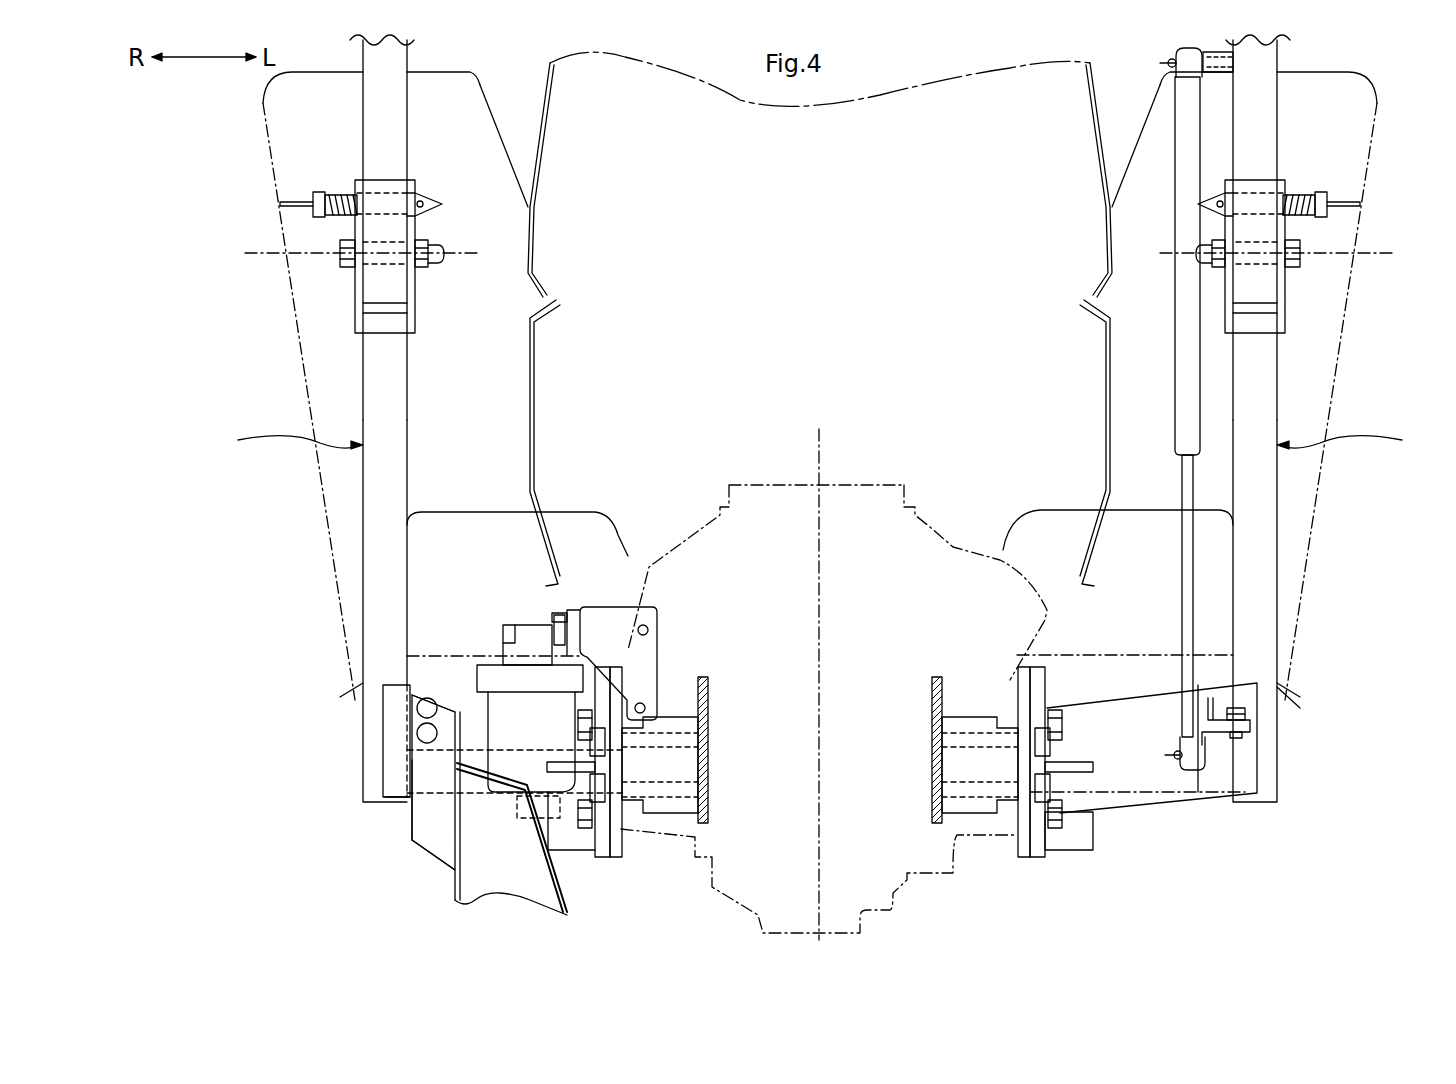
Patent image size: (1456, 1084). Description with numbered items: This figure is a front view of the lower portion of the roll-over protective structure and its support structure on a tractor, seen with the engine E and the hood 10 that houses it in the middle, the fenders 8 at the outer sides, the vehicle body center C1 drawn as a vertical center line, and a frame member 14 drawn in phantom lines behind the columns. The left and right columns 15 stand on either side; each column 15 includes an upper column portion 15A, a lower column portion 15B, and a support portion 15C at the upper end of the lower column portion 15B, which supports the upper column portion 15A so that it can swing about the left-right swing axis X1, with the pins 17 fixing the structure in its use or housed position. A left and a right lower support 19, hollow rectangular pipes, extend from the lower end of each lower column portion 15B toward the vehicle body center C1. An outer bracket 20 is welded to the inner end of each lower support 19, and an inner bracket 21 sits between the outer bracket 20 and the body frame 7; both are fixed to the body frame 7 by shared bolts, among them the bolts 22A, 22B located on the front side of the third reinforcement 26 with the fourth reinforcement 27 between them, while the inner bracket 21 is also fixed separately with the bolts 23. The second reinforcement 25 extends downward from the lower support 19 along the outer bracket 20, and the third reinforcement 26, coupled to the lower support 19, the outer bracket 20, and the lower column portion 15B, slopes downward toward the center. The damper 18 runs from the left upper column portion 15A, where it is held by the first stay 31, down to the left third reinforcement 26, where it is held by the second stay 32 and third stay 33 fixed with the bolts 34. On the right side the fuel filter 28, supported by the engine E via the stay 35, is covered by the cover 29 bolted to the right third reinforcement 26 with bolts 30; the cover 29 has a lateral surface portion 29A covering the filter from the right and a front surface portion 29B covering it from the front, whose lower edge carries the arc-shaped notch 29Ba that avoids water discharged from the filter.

The body frame 7 is at (708, 707).
The fender 8 is at (455, 73).
The hood 10 is at (1118, 125).
The frame member 14 is at (462, 512).
The column 15 is at (820, 446).
The upper column portion 15A is at (372, 115).
The lower column portion 15B is at (370, 487).
The support portion 15C is at (358, 300).
The pin 17 is at (330, 196).
The damper 18 is at (1180, 338).
The lower support 19 is at (437, 797).
The outer bracket 20 is at (600, 860).
The inner bracket 21 is at (617, 853).
The bolt 22A is at (560, 720).
The bolt 22B is at (575, 818).
The bolt 23 is at (665, 740).
The second reinforcement 25 is at (578, 847).
The third reinforcement 26 is at (395, 690).
The fourth reinforcement 27 is at (573, 770).
The fuel filter 28 is at (483, 670).
The cover 29 is at (455, 885).
The lateral surface portion 29A is at (453, 753).
The front surface portion 29B is at (463, 823).
The notch 29Ba is at (520, 897).
The bolt 30 is at (417, 734).
The first stay 31 is at (1225, 55).
The second stay 32 is at (1220, 705).
The third stay 33 is at (1217, 740).
The bolt 34 is at (1247, 713).
The stay 35 is at (612, 622).
The swing axis X1 is at (820, 254).
The vehicle body center C1 is at (818, 668).
The engine E is at (878, 487).